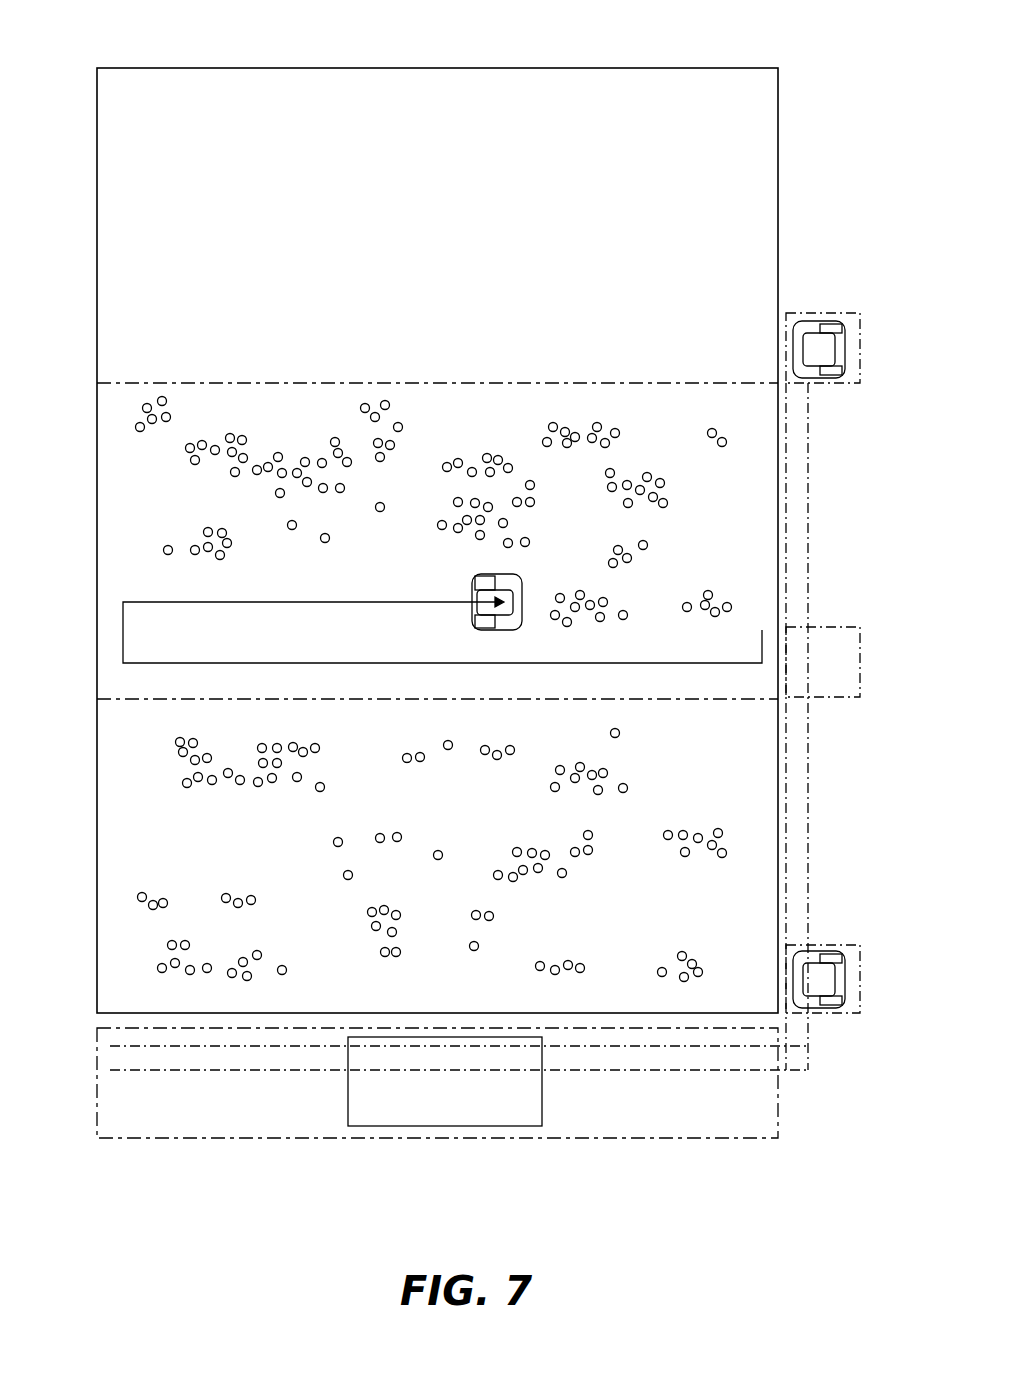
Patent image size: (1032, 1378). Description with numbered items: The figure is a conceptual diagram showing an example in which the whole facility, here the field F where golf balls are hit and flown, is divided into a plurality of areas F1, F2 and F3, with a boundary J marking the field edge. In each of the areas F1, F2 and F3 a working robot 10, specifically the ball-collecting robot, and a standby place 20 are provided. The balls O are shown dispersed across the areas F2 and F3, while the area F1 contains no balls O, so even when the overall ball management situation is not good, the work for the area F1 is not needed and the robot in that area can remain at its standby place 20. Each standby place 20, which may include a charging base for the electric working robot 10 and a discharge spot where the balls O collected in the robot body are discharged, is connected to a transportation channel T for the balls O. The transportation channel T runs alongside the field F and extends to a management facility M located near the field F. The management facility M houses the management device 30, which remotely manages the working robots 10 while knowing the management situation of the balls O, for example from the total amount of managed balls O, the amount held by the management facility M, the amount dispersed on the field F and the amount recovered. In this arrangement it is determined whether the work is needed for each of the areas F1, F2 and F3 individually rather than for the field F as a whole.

The field F is at (634, 57).
The edge of sheet J is at (706, 58).
The area F1 is at (88, 75).
The area F2 is at (88, 393).
The area F3 is at (88, 705).
The balls O is at (131, 429).
The working robot 10 is at (838, 378).
The standby place 20 is at (831, 312).
The transportation channel T is at (810, 505).
The management facility M is at (778, 1108).
The management device 30 is at (542, 1090).